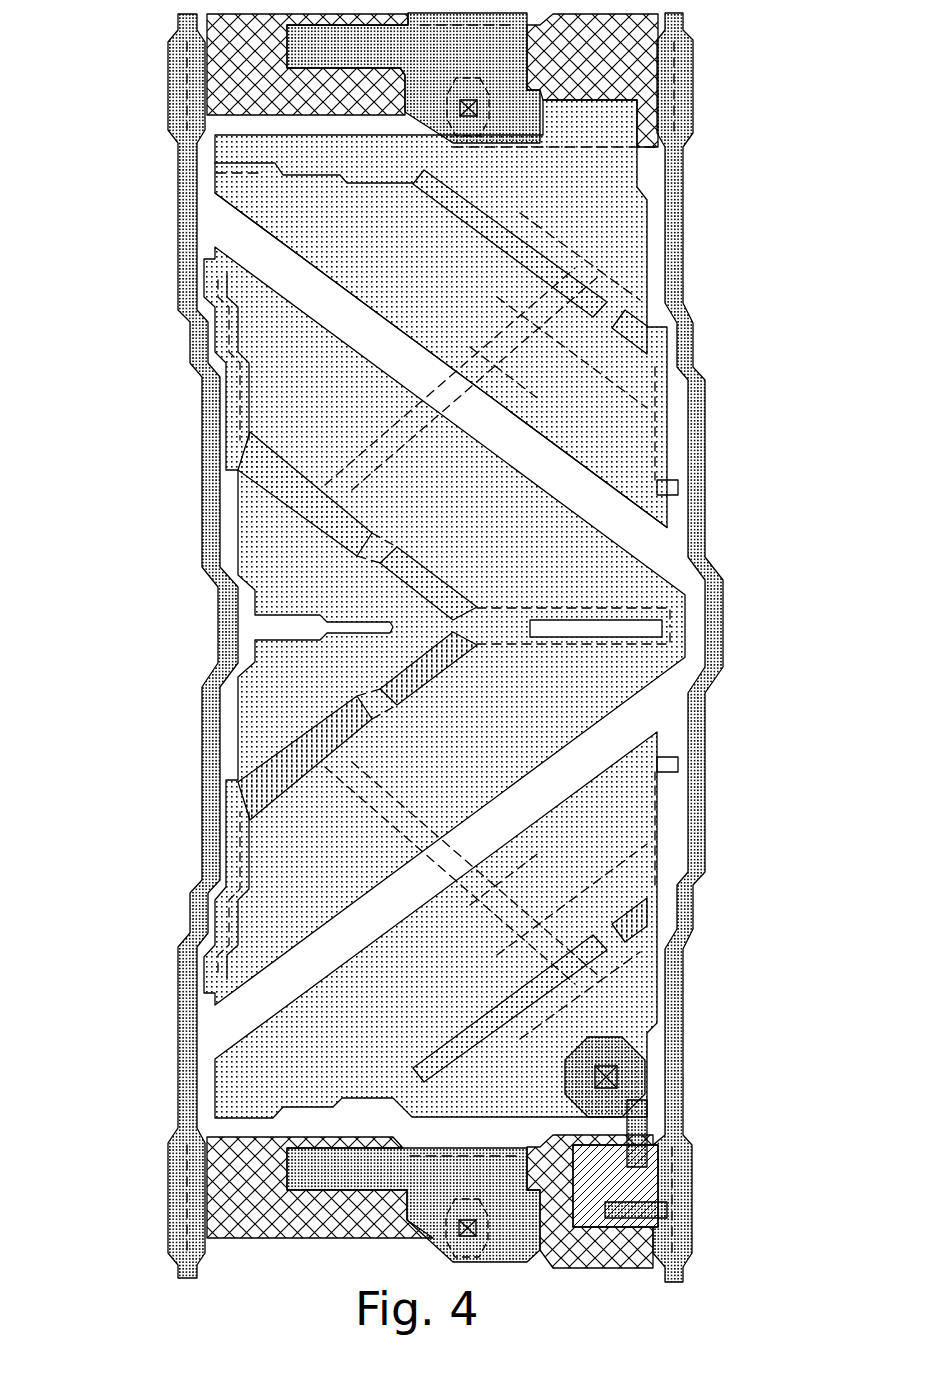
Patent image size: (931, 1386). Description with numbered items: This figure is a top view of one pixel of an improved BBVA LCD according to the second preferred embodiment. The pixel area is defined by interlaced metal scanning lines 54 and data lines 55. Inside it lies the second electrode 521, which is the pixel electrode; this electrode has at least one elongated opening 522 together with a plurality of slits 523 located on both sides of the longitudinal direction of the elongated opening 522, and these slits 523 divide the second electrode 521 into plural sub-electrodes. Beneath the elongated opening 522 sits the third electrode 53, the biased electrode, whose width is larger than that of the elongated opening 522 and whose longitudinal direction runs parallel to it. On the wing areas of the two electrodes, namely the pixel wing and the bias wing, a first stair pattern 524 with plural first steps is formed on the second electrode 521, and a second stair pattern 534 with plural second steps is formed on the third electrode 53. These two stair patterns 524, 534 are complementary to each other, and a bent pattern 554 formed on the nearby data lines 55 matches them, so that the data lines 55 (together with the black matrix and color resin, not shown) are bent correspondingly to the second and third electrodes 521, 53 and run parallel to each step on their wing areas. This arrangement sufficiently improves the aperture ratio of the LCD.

The third electrode 53 is at (650, 343).
The scanning line 54 is at (267, 1215).
The data line 55 is at (683, 276).
The second electrode 521 is at (625, 466).
The elongated opening 522 is at (553, 258).
The slits 523 is at (232, 237).
The first stair pattern 524 is at (240, 409).
The second stair pattern 534 is at (232, 321).
The bent pattern 554 is at (185, 350).